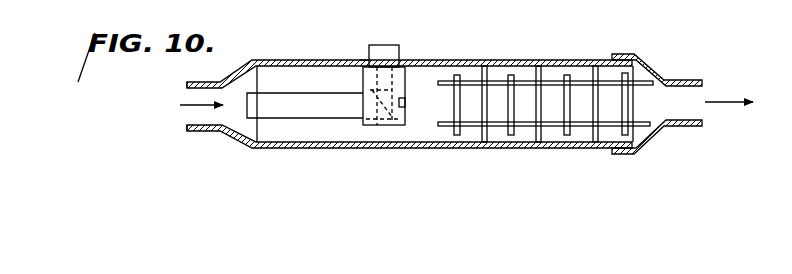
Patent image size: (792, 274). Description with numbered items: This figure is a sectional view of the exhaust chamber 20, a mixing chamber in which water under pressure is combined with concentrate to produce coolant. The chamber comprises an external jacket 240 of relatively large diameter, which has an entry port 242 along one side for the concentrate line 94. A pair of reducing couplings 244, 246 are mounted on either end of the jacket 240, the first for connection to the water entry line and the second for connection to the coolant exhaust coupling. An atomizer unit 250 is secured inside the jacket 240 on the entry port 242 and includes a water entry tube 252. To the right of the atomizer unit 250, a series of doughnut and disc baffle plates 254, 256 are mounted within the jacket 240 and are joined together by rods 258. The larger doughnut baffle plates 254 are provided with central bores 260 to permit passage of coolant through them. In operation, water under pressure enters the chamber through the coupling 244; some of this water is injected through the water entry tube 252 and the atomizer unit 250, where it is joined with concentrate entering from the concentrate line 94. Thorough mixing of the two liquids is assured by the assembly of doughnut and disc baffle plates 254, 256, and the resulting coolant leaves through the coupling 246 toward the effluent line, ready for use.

The exhaust chamber 20 is at (232, 143).
The concentrate line 94 is at (396, 50).
The external jacket 240 is at (392, 148).
The entry port 242 is at (368, 62).
The reducing coupling 244 is at (230, 74).
The reducing coupling 246 is at (666, 78).
The atomizer unit 250 is at (370, 80).
The water entry tube 252 is at (317, 108).
The doughnut baffle plates 254 is at (568, 165).
The disc baffle plates 256 is at (567, 75).
The rods 258 is at (640, 130).
The central bores 260 is at (537, 102).